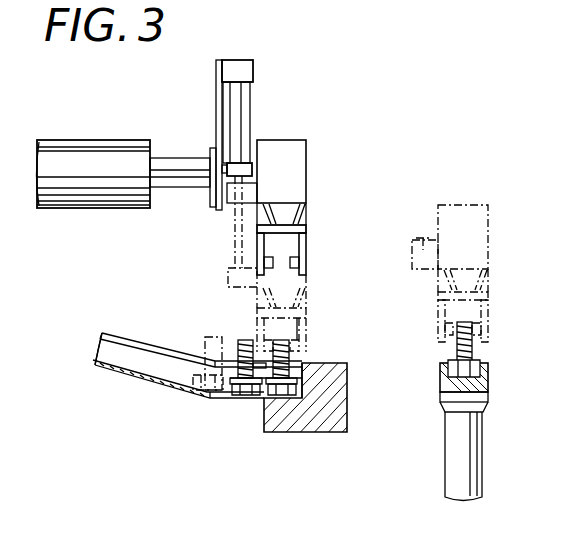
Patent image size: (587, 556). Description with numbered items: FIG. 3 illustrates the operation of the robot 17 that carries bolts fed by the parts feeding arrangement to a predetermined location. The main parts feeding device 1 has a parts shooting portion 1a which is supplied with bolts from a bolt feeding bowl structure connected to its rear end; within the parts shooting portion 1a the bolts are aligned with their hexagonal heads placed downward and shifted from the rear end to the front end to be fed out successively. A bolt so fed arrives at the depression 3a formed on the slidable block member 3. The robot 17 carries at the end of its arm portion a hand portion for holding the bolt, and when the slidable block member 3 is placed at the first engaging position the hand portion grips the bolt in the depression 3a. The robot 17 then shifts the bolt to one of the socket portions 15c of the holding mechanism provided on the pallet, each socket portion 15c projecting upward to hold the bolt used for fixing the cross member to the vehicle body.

The main parts feeding device 1 is at (90, 315).
The parts shooting portion 1a is at (150, 346).
The slidable block member 3 is at (337, 418).
The depression 3a is at (302, 363).
The socket portion 15c is at (441, 377).
The robot 17 is at (74, 139).